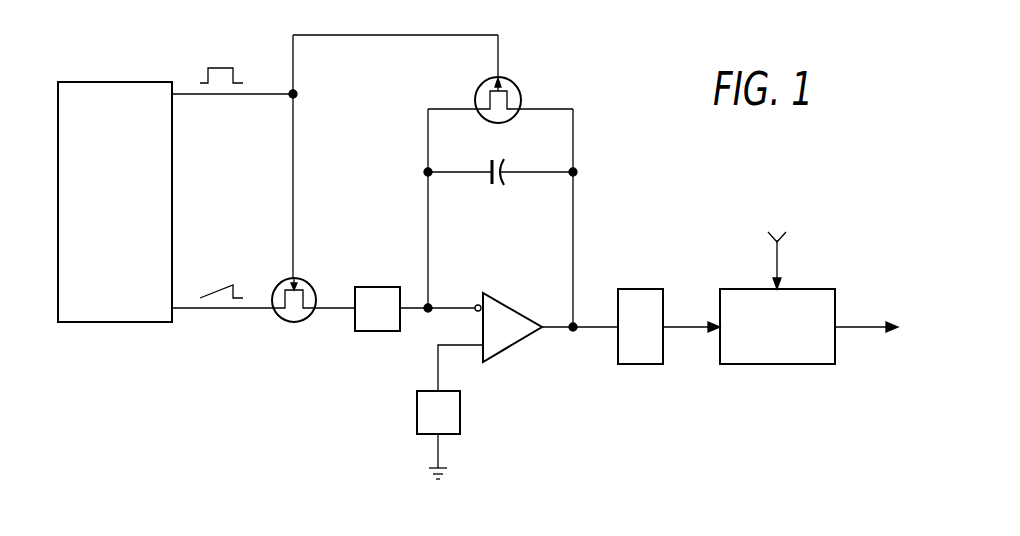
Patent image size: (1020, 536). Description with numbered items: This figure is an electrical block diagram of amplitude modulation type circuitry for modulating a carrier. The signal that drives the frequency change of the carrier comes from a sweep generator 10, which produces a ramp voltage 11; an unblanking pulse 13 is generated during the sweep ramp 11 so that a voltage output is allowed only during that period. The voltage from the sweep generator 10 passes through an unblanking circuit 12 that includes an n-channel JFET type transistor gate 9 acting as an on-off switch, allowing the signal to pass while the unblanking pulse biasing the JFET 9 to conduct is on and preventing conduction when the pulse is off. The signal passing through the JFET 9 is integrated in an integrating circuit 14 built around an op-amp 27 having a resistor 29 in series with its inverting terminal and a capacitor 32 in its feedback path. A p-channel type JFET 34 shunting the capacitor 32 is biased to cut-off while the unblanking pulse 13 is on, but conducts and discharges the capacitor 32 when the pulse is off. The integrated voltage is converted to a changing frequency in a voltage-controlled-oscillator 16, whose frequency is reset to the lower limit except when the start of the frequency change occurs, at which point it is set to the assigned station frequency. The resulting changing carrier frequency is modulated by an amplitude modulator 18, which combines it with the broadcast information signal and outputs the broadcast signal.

The sweep generator 10 is at (100, 82).
The unblanking pulse 13 is at (222, 67).
The ramp voltage 11 is at (226, 290).
The JFET type transistor gate 9 is at (286, 282).
The unblanking circuit 12 is at (324, 245).
The resistor 29 is at (372, 331).
The op-amp 27 is at (509, 304).
The integrating circuit 14 is at (533, 364).
The capacitor 32 is at (490, 164).
The p-channel type JFET 34 is at (482, 84).
The voltage-controlled-oscillator (VCO) 16 is at (635, 289).
The amplitude modulator 18 is at (770, 364).